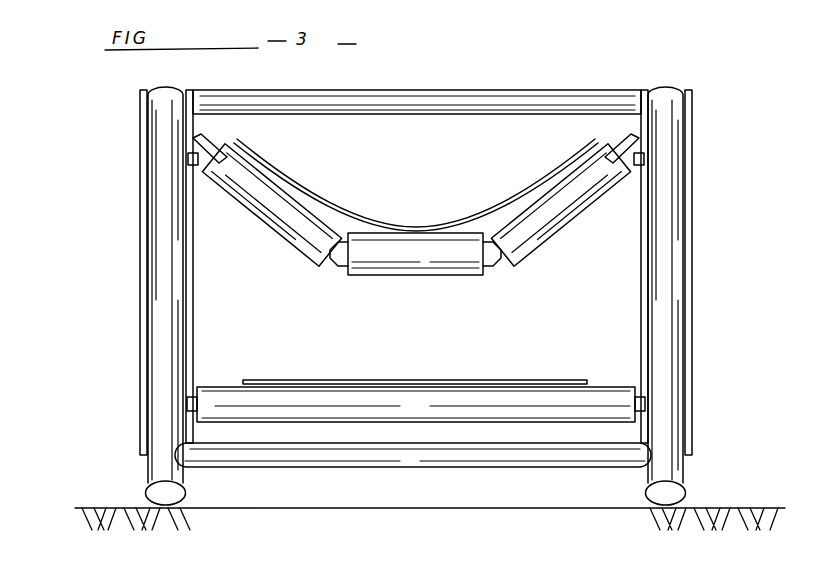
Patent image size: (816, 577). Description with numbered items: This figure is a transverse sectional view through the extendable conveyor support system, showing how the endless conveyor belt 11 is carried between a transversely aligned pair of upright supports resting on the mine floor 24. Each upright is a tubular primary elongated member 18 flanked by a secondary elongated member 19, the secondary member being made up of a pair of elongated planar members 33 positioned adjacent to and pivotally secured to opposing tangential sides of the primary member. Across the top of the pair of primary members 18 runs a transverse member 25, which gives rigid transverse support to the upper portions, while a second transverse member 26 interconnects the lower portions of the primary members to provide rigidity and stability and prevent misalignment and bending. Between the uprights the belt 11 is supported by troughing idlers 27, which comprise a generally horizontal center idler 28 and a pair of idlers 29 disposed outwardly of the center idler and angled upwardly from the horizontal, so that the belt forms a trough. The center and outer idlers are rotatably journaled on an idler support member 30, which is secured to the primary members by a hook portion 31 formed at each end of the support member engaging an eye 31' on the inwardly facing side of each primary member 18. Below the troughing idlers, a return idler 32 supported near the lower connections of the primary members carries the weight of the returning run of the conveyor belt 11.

The endless conveyor belt 11 is at (481, 217).
The primary elongated member 18 is at (150, 179).
The secondary elongated member 19 is at (147, 280).
The mine floor 24 is at (207, 510).
The transverse member 25 is at (445, 91).
The transverse member 26 is at (298, 468).
The troughing idlers 27 is at (425, 277).
The center idler 28 is at (387, 276).
The idler 29 is at (258, 221).
The idler support member 30 is at (497, 272).
The hook portion 31 is at (416, 141).
The eye 31' is at (416, 188).
The return idler 32 is at (215, 387).
The elongated planar member 33 is at (142, 312).